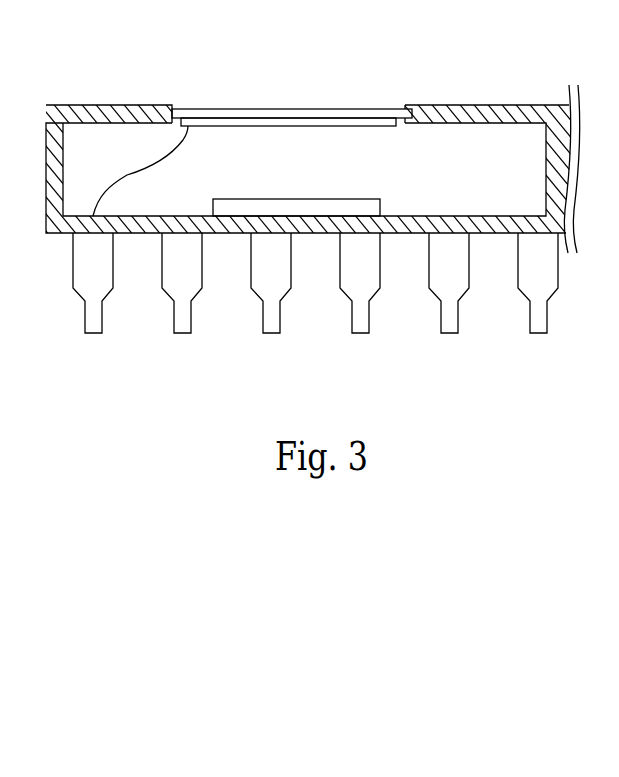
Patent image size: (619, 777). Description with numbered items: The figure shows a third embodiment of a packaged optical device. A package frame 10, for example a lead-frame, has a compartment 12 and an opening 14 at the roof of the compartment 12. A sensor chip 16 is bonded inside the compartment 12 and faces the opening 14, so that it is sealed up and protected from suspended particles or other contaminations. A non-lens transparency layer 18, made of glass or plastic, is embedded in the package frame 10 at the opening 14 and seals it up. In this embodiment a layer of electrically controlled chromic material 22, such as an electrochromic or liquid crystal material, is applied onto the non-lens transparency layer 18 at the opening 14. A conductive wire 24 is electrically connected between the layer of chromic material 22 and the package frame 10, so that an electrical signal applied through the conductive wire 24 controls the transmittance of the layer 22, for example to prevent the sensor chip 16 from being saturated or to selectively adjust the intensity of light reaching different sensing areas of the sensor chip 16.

The package frame 10 is at (485, 105).
The compartment 12 is at (350, 156).
The opening 14 is at (293, 94).
The sensor chip 16 is at (296, 199).
The non-lens transparency layer 18 is at (232, 108).
The layer of electrically controlled chromic material 22 is at (240, 127).
The conductive wire 24 is at (152, 168).